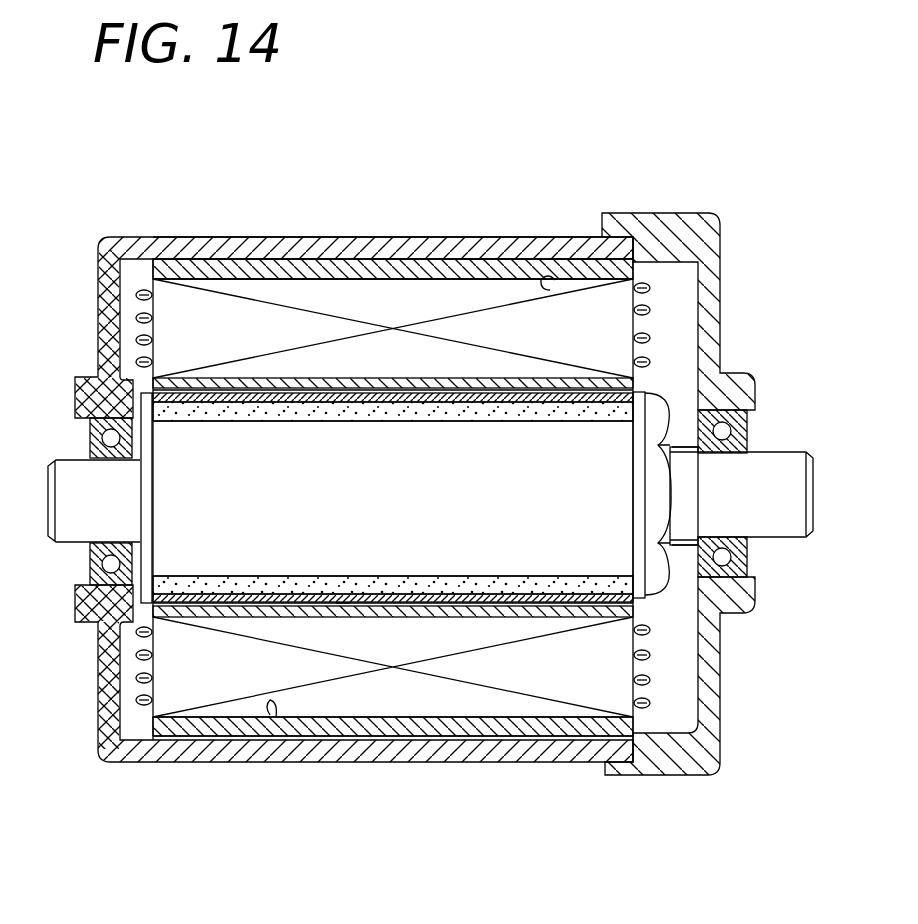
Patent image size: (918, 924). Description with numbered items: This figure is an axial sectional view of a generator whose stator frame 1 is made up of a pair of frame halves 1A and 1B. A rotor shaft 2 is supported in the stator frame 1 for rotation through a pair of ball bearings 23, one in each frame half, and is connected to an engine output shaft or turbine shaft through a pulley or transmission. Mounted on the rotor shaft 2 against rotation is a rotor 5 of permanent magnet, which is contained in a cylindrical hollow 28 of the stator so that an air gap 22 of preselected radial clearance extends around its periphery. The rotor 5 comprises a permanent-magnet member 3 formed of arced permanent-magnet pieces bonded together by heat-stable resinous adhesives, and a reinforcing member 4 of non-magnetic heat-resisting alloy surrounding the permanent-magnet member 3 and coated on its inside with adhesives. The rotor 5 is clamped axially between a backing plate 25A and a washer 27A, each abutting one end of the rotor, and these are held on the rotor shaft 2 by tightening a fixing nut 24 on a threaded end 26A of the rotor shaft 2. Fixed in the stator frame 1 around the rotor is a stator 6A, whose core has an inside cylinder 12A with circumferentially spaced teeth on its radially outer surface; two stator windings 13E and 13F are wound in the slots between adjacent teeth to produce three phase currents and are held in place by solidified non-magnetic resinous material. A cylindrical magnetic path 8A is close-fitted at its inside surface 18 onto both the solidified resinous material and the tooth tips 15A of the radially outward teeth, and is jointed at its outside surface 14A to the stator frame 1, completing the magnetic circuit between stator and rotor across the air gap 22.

The stator frame 1 is at (538, 228).
The frame half 1A is at (313, 243).
The frame half 1B is at (678, 230).
The rotor shaft 2 is at (80, 490).
The permanent-magnet member 3 is at (280, 408).
The reinforcing member 4 is at (352, 397).
The rotor 5 is at (160, 410).
The stator 6A is at (200, 292).
The cylindrical magnetic path 8A is at (370, 268).
The inside cylinder 12A is at (496, 383).
The stator winding 13E is at (136, 314).
The stator winding 13F is at (136, 362).
The outside surface 14A is at (483, 258).
The tooth tips 15A is at (253, 277).
The inside surface 18 is at (555, 280).
The air gap 22 is at (420, 390).
The ball bearings 23 is at (95, 556).
The fixing nut 24 is at (655, 412).
The backing plate 25A is at (148, 572).
The threaded end 26A is at (681, 548).
The washer 27A is at (640, 437).
The cylindrical hollow 28 is at (348, 603).